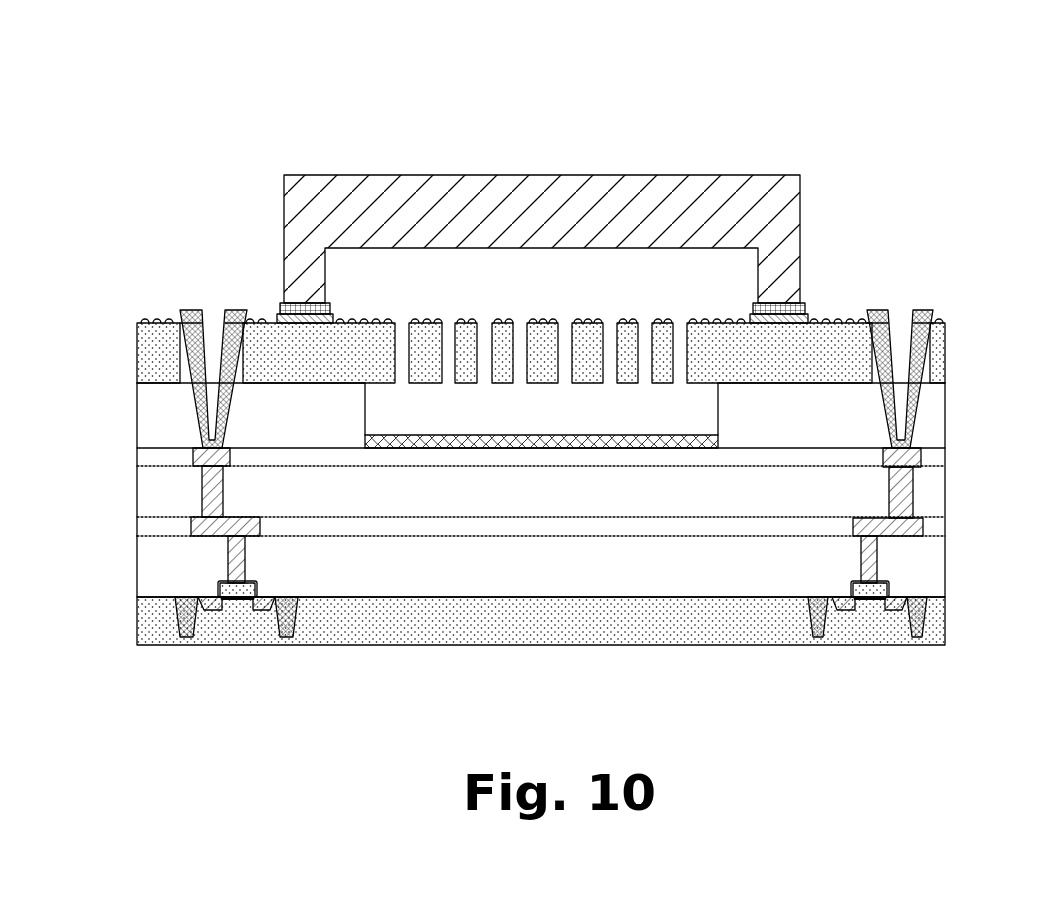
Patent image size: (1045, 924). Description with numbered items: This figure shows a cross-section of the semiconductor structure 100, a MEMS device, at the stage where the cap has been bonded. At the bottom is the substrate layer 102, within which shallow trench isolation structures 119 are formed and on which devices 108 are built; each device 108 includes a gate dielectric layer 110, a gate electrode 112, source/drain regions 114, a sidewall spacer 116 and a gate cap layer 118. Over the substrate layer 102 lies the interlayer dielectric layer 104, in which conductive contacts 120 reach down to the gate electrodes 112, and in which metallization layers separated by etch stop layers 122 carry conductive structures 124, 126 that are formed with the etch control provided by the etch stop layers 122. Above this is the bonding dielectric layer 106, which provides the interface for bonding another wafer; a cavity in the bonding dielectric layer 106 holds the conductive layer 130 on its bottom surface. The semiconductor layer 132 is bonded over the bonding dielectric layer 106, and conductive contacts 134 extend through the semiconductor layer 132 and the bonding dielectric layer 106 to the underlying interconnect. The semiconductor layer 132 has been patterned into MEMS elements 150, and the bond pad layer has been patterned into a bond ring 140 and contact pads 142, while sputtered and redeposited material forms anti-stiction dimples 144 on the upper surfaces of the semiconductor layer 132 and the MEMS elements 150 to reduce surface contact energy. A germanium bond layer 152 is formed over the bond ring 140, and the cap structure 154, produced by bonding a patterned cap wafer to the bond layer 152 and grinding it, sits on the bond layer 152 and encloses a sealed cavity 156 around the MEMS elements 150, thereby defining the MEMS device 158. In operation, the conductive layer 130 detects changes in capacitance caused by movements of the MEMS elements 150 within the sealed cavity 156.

The semiconductor structure 100 is at (122, 60).
The substrate layer 102 is at (170, 640).
The interlayer dielectric layer 104 is at (155, 580).
The bonding dielectric layer 106 is at (165, 425).
The devices 108 is at (232, 670).
The gate dielectric layer 110 is at (240, 600).
The gate electrode 112 is at (222, 600).
The source/drain regions 114 is at (270, 605).
The sidewall spacer 116 is at (255, 588).
The gate cap layer 118 is at (255, 585).
The shallow trench isolation (STI) structures 119 is at (185, 612).
The conductive contacts 120 is at (235, 555).
The etch stop layers 122 is at (500, 537).
The conductive structures 124 is at (200, 458).
The conductive structures 126 is at (205, 495).
The conductive layer 130 is at (607, 447).
The semiconductor layer 132 is at (165, 345).
The conductive contacts 134 is at (160, 378).
The bond ring 140 is at (335, 318).
The contact pads 142 is at (180, 310).
The anti-stiction dimples 144 is at (470, 322).
The MEMS elements 150 is at (590, 335).
The bond layer 152 is at (280, 303).
The cap structure 154 is at (303, 192).
The sealed cavity 156 is at (700, 259).
The MEMS device 158 is at (567, 128).